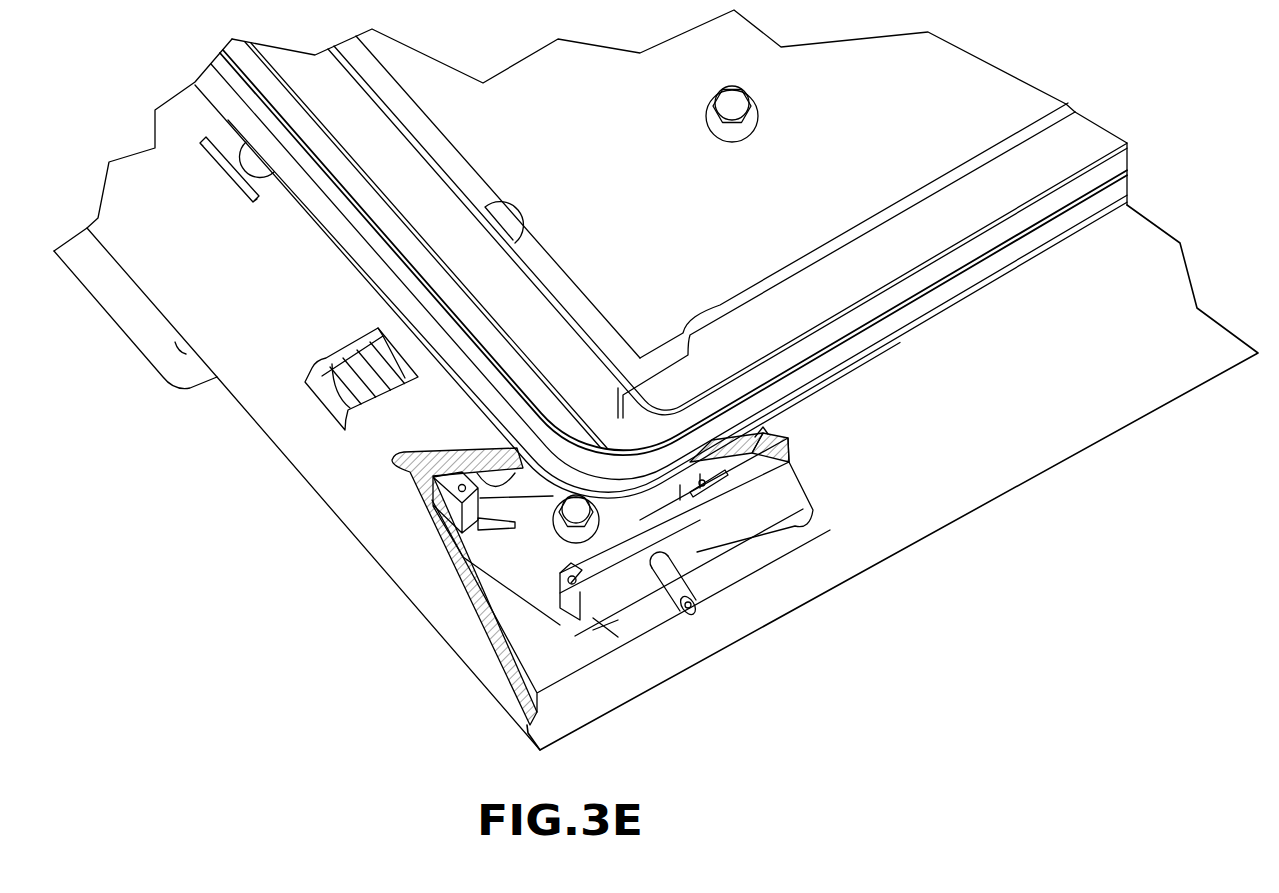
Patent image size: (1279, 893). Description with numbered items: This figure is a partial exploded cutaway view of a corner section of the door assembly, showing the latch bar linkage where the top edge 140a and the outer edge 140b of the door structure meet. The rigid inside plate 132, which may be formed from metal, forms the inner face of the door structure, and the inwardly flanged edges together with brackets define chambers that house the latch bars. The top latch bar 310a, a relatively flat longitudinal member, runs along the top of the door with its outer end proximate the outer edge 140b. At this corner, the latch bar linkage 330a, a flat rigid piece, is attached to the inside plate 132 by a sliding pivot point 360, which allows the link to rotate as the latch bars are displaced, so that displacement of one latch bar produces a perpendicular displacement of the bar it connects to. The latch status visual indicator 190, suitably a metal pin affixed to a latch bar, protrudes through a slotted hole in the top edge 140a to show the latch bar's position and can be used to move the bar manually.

The inside plate 132 is at (672, 215).
The top edge 140a is at (988, 434).
The outer edge 140b is at (287, 304).
The latch status visual indicator 190 is at (673, 612).
The top latch bar 310a is at (735, 518).
The latch bar linkage 330a is at (528, 562).
The sliding pivot point 360 is at (576, 505).